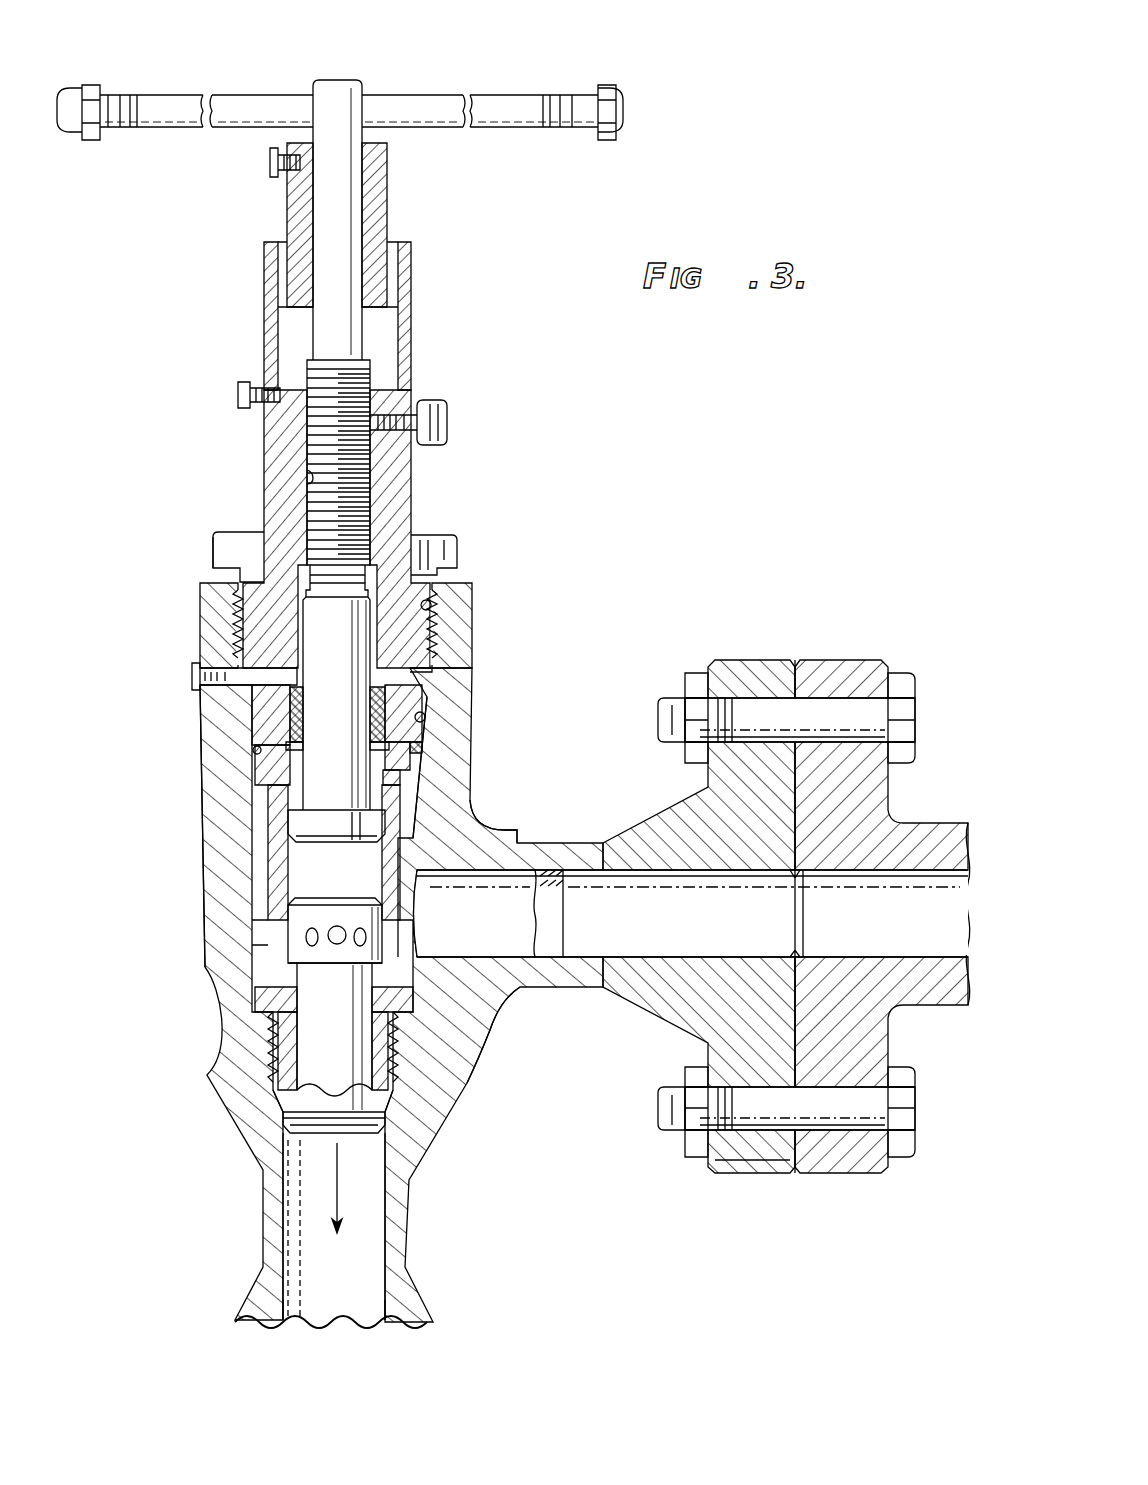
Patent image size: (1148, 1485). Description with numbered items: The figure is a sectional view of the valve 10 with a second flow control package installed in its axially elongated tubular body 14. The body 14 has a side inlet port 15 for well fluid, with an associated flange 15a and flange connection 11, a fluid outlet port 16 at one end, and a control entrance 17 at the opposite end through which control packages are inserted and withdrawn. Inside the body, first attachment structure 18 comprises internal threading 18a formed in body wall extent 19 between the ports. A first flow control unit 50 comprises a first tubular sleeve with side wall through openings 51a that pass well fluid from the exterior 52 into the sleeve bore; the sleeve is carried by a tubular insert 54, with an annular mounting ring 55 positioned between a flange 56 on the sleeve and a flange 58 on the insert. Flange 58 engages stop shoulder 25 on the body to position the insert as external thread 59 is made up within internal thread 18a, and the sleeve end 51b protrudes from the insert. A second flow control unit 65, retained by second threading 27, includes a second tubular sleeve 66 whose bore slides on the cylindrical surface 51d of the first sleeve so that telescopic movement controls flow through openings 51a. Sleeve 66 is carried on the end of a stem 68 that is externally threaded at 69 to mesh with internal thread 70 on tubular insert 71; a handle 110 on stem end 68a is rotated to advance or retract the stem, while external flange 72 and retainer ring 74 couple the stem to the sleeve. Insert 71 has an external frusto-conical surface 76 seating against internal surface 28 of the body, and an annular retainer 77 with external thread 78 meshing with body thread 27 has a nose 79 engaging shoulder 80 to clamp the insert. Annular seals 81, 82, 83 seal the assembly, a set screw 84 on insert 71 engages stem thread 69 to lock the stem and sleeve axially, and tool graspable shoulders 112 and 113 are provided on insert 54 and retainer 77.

The valve 10 is at (180, 808).
The flange connection 11 is at (800, 632).
The tubular body 14 is at (225, 865).
The side inlet port 15 is at (509, 898).
The flange 15a is at (750, 1160).
The fluid outlet port 16 is at (335, 1300).
The control entrance 17 is at (440, 598).
The first attachment structure 18 is at (262, 1090).
The internal threading 18a is at (262, 1090).
The body wall extent 19 is at (265, 1065).
The stop shoulder 25 is at (455, 1035).
The second threading 27 is at (436, 620).
The internal surface 28 is at (425, 722).
The first flow control unit 50 is at (282, 962).
The side wall through openings 51a is at (336, 926).
The sleeve end 51b is at (380, 1130).
The cylindrical surface 51d is at (258, 945).
The exterior 52 is at (398, 957).
The tubular insert 54 is at (385, 1070).
The annular mounting ring 55 is at (318, 1012).
The flange 56 is at (365, 972).
The flange 58 is at (268, 1000).
The external thread 59 is at (410, 1060).
The second flow control unit 65 is at (270, 838).
The second tubular sleeve 66 is at (397, 845).
The stem 68 is at (332, 718).
The stem end 68a is at (338, 100).
The stem thread 69 is at (360, 482).
The internal thread 70 is at (307, 478).
The tubular insert 71 is at (280, 428).
The external flange 72 is at (365, 823).
The retainer ring 74 is at (400, 775).
The external frusto-conical surface 76 is at (425, 702).
The annular retainer 77 is at (193, 545).
The external thread 78 is at (240, 615).
The nose 79 is at (437, 690).
The shoulder 80 is at (437, 660).
The annular seal 81 is at (268, 795).
The annular seal 82 is at (300, 745).
The annular seal 83 is at (252, 748).
The set screw 84 is at (432, 394).
The handle 110 is at (432, 90).
The tool graspable shoulder 112 is at (265, 985).
The tool graspable shoulder 113 is at (450, 545).